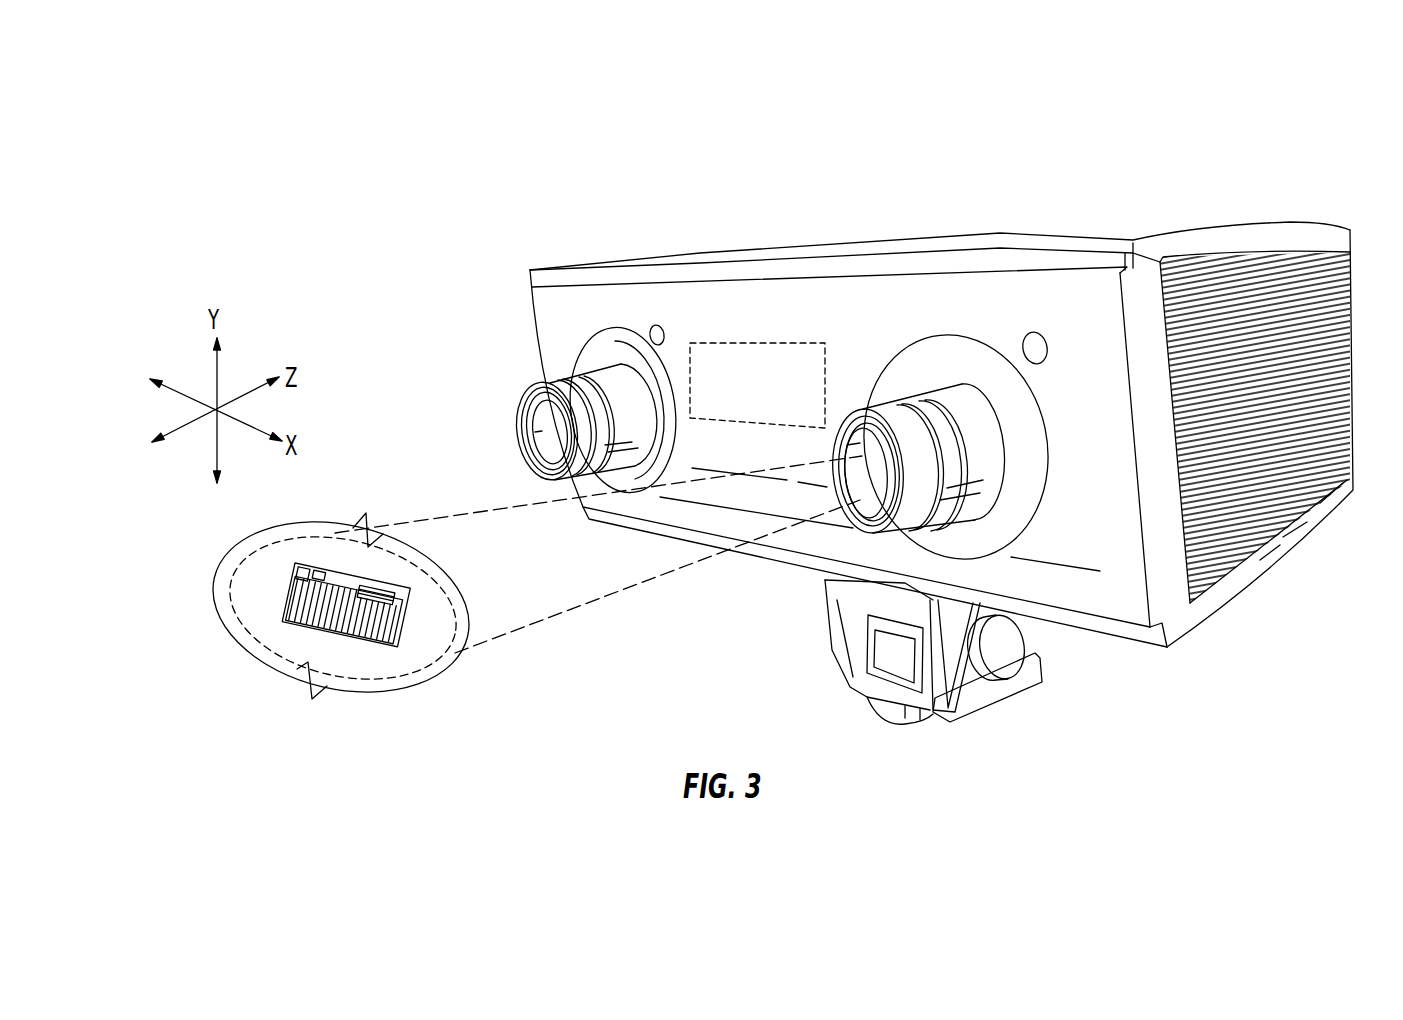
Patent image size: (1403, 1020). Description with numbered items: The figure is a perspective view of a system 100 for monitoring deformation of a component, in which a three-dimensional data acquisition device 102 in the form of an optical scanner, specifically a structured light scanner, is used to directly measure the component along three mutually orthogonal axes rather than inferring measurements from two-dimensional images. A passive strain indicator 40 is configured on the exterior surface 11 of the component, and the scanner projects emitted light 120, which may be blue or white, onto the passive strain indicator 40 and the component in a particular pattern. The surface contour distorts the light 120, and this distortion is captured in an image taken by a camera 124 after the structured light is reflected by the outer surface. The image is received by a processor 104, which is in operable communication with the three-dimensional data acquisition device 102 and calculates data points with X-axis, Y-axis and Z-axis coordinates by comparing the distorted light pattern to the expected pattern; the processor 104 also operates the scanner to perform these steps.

The system 100 is at (825, 394).
The three-dimensional data acquisition device 102 is at (546, 270).
The processor 104 is at (742, 338).
The light 120 is at (645, 583).
The camera 124 is at (525, 388).
The exterior surface 11 is at (258, 610).
The passive strain indicator 40 is at (366, 662).